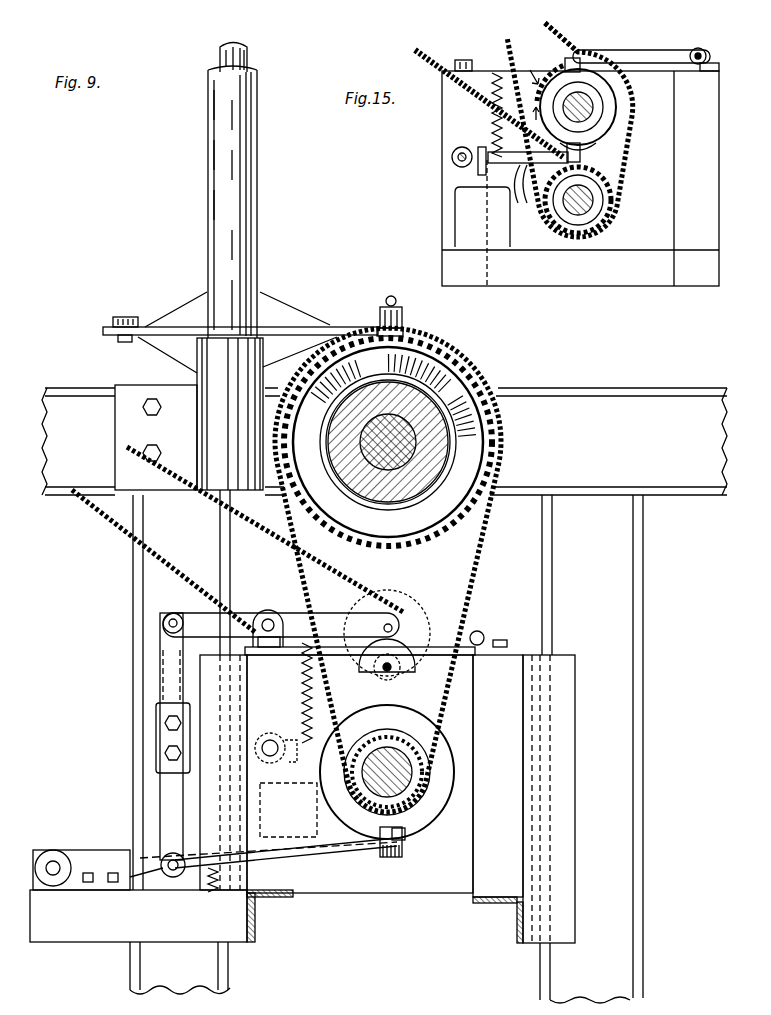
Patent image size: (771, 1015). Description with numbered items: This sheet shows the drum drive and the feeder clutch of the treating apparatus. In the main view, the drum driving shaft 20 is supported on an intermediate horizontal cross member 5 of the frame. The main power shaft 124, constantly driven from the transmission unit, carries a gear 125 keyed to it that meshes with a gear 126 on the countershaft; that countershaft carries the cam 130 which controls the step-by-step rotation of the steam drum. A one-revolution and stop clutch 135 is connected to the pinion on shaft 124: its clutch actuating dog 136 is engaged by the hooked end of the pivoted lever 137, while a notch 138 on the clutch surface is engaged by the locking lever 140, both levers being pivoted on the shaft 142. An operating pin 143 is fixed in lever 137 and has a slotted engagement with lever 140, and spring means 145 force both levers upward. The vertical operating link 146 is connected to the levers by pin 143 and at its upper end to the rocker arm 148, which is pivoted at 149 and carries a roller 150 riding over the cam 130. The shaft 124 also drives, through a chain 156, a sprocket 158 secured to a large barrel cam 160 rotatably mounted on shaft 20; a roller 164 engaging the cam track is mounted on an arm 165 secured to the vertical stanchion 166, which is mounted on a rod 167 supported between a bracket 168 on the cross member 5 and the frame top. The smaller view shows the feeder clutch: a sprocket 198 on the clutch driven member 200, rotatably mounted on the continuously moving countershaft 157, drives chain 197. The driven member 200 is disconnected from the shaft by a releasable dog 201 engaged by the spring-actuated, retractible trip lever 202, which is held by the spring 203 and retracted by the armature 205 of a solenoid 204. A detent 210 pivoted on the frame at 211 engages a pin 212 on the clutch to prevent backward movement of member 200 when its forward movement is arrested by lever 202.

In FIG. 9, the intermediate horizontal cross member 5 is at (607, 390).
In FIG. 9, the driving shaft 20 is at (400, 432).
In FIG. 9, the main power shaft 124 is at (412, 772).
In FIG. 15, the main power shaft 124 is at (592, 205).
In FIG. 9, the gear 125 is at (430, 740).
In FIG. 9, the gear 126 is at (430, 700).
In FIG. 9, the cam 130 is at (405, 650).
In FIG. 9, the one-revolution and stop clutch 135 is at (455, 790).
In FIG. 9, the clutch actuating dog 136 is at (404, 840).
In FIG. 9, the pivoted lever 137 is at (345, 855).
In FIG. 9, the notch 138 is at (415, 830).
In FIG. 9, the locking lever 140 is at (398, 893).
In FIG. 9, the shaft 142 is at (58, 862).
In FIG. 9, the operating pin 143 is at (178, 877).
In FIG. 9, the spring means 145 is at (252, 918).
In FIG. 9, the vertical operating link 146 is at (160, 782).
In FIG. 9, the rocker arm 148 is at (248, 612).
In FIG. 9, the pivot 149 is at (272, 613).
In FIG. 9, the roller 150 is at (411, 600).
In FIG. 9, the chain 156 is at (478, 530).
In FIG. 15, the chain 156 is at (628, 150).
In FIG. 15, the countershaft 157 is at (593, 105).
In FIG. 9, the sprocket 158 is at (440, 358).
In FIG. 9, the barrel cam 160 is at (490, 390).
In FIG. 9, the roller 164 is at (405, 330).
In FIG. 9, the arm 165 is at (325, 310).
In FIG. 9, the vertical pipe or stanchion 166 is at (252, 225).
In FIG. 9, the rod 167 is at (247, 50).
In FIG. 9, the bracket 168 is at (197, 392).
In FIG. 9, the chain 197 is at (120, 536).
In FIG. 15, the chain 197 is at (570, 32).
In FIG. 15, the sprocket 198 is at (535, 85).
In FIG. 15, the clutch driven member 200 is at (612, 113).
In FIG. 15, the releasable dog 201 is at (605, 140).
In FIG. 9, the trip lever 202 is at (297, 744).
In FIG. 15, the trip lever 202 is at (527, 172).
In FIG. 9, the spring 203 is at (300, 702).
In FIG. 15, the spring 203 is at (490, 125).
In FIG. 9, the solenoid 204 is at (310, 822).
In FIG. 15, the solenoid 204 is at (500, 236).
In FIG. 15, the armature 205 is at (478, 177).
In FIG. 15, the detent 210 is at (668, 45).
In FIG. 15, the pivot 211 is at (708, 55).
In FIG. 15, the pin 212 is at (563, 67).